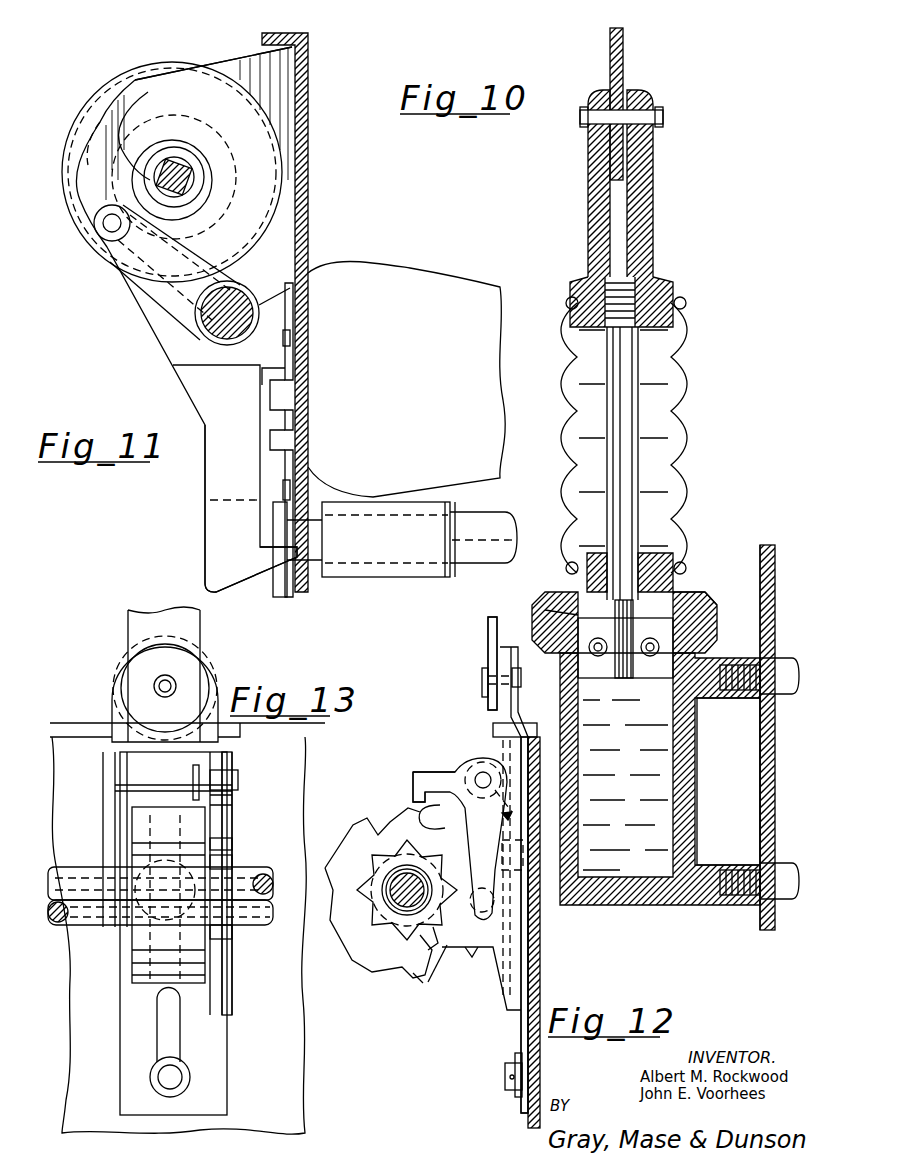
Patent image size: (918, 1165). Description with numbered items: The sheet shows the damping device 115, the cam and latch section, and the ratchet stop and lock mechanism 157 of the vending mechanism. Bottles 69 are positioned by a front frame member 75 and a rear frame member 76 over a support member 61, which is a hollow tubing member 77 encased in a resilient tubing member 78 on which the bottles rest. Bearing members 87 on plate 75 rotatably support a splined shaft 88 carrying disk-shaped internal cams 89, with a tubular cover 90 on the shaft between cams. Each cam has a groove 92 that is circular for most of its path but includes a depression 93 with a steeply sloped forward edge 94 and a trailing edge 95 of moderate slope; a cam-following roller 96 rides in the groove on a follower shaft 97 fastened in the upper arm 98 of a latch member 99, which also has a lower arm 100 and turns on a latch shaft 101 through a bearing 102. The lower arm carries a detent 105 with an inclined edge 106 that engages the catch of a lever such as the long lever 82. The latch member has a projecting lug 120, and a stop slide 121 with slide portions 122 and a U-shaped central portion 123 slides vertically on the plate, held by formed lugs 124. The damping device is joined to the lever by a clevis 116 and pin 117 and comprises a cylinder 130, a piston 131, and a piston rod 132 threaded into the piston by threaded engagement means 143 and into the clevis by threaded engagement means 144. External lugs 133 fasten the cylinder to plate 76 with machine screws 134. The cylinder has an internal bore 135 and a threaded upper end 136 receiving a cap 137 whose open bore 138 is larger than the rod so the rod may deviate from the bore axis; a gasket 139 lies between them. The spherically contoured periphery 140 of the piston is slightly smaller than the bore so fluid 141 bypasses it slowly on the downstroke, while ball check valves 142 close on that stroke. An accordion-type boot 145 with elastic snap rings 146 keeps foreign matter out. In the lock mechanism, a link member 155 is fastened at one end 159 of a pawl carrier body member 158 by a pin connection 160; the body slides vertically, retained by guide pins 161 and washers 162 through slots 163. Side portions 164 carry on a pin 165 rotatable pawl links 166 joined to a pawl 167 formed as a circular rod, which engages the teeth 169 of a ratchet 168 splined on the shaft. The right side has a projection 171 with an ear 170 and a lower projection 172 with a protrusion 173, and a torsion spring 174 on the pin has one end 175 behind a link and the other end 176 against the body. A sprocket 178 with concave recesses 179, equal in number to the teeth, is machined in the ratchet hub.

In FIG. 11, the support member 61 is at (390, 577).
In FIG. 11, the bottles 69 is at (395, 268).
In FIG. 11, the front frame member 75 is at (307, 92).
In FIG. 10, the rear frame member 76 is at (775, 760).
In FIG. 11, the hollow tubing member 77 is at (480, 563).
In FIG. 11, the resilient tubing member 78 is at (455, 505).
In FIG. 10, the long lever 82 is at (623, 47).
In FIG. 11, the bearing members 87 is at (256, 48).
In FIG. 11, the splined shaft 88 is at (178, 160).
In FIG. 12, the splined shaft 88 is at (402, 870).
In FIG. 11, the internal cams 89 is at (156, 68).
In FIG. 11, the tubular cover 90 is at (135, 95).
In FIG. 13, the tubular cover 90 is at (250, 925).
In FIG. 12, the tubular cover 90 is at (372, 868).
In FIG. 11, the groove 92 is at (250, 165).
In FIG. 11, the depression 93 is at (138, 160).
In FIG. 11, the forward edge 94 is at (95, 158).
In FIG. 11, the trailing edge 95 is at (128, 135).
In FIG. 11, the cam-following roller 96 is at (100, 226).
In FIG. 11, the follower shaft 97 is at (106, 233).
In FIG. 11, the upper arm 98 is at (118, 282).
In FIG. 11, the latch member 99 is at (152, 350).
In FIG. 11, the lower arm 100 is at (205, 503).
In FIG. 11, the latch shaft 101 is at (258, 288).
In FIG. 11, the bearing 102 is at (200, 313).
In FIG. 11, the detent 105 is at (275, 562).
In FIG. 11, the inclined edge 106 is at (285, 560).
In FIG. 10, the damping device 115 is at (722, 585).
In FIG. 10, the clevis 116 is at (588, 188).
In FIG. 10, the pin 117 is at (580, 118).
In FIG. 11, the projecting lug 120 is at (270, 440).
In FIG. 11, the stop slide 121 is at (293, 400).
In FIG. 11, the slide portions 122 is at (293, 345).
In FIG. 11, the U-shaped central portion 123 is at (270, 392).
In FIG. 11, the formed lugs 124 is at (290, 335).
In FIG. 10, the cylinder 130 is at (560, 878).
In FIG. 10, the piston 131 is at (690, 596).
In FIG. 10, the piston rod 132 is at (640, 430).
In FIG. 10, the external lugs 133 is at (722, 698).
In FIG. 10, the machine screws 134 is at (785, 694).
In FIG. 12, the internal bore 135 is at (578, 700).
In FIG. 12, the upper end 136 is at (548, 625).
In FIG. 10, the cap 137 is at (714, 600).
In FIG. 10, the open bore 138 is at (655, 560).
In FIG. 10, the gasket 139 is at (560, 604).
In FIG. 10, the spherically contoured periphery 140 is at (673, 635).
In FIG. 10, the fluid 141 is at (660, 790).
In FIG. 10, the ball check valves 142 is at (598, 657).
In FIG. 10, the threaded engagement means 143 is at (624, 680).
In FIG. 10, the threaded engagement means 144 is at (640, 285).
In FIG. 10, the accordion-type boot 145 is at (690, 356).
In FIG. 10, the elastic snap rings 146 is at (568, 300).
In FIG. 13, the link member 155 is at (128, 625).
In FIG. 12, the link member 155 is at (488, 640).
In FIG. 12, the ratchet stop and lock mechanism 157 is at (447, 762).
In FIG. 12, the pawl carrier body member 158 is at (500, 728).
In FIG. 12, the one end 159 is at (495, 640).
In FIG. 13, the pin connection 160 is at (176, 680).
In FIG. 12, the pin connection 160 is at (505, 660).
In FIG. 13, the guide pins 161 is at (172, 1074).
In FIG. 12, the guide pins 161 is at (518, 900).
In FIG. 13, the washers 162 is at (178, 1090).
In FIG. 12, the washers 162 is at (502, 853).
In FIG. 13, the slots 163 is at (118, 785).
In FIG. 13, the side portions 164 is at (232, 810).
In FIG. 12, the side portions 164 is at (502, 965).
In FIG. 13, the pin 165 is at (232, 775).
In FIG. 12, the pin 165 is at (480, 770).
In FIG. 13, the pawl links 166 is at (120, 815).
In FIG. 12, the pawl links 166 is at (462, 830).
In FIG. 13, the pawl 167 is at (130, 895).
In FIG. 12, the pawl 167 is at (480, 903).
In FIG. 13, the ratchet 168 is at (207, 970).
In FIG. 12, the ratchet 168 is at (372, 962).
In FIG. 12, the teeth 169 is at (418, 980).
In FIG. 13, the ear 170 is at (238, 790).
In FIG. 12, the ear 170 is at (413, 790).
In FIG. 12, the projection 171 is at (430, 772).
In FIG. 12, the projection 172 is at (438, 962).
In FIG. 12, the protrusion 173 is at (428, 945).
In FIG. 13, the torsion spring 174 is at (193, 768).
In FIG. 12, the torsion spring 174 is at (520, 712).
In FIG. 12, the one end 175 is at (500, 795).
In FIG. 12, the other end 176 is at (505, 815).
In FIG. 13, the sprocket 178 is at (232, 860).
In FIG. 12, the sprocket 178 is at (368, 930).
In FIG. 13, the concave recesses 179 is at (232, 840).
In FIG. 12, the concave recesses 179 is at (372, 905).